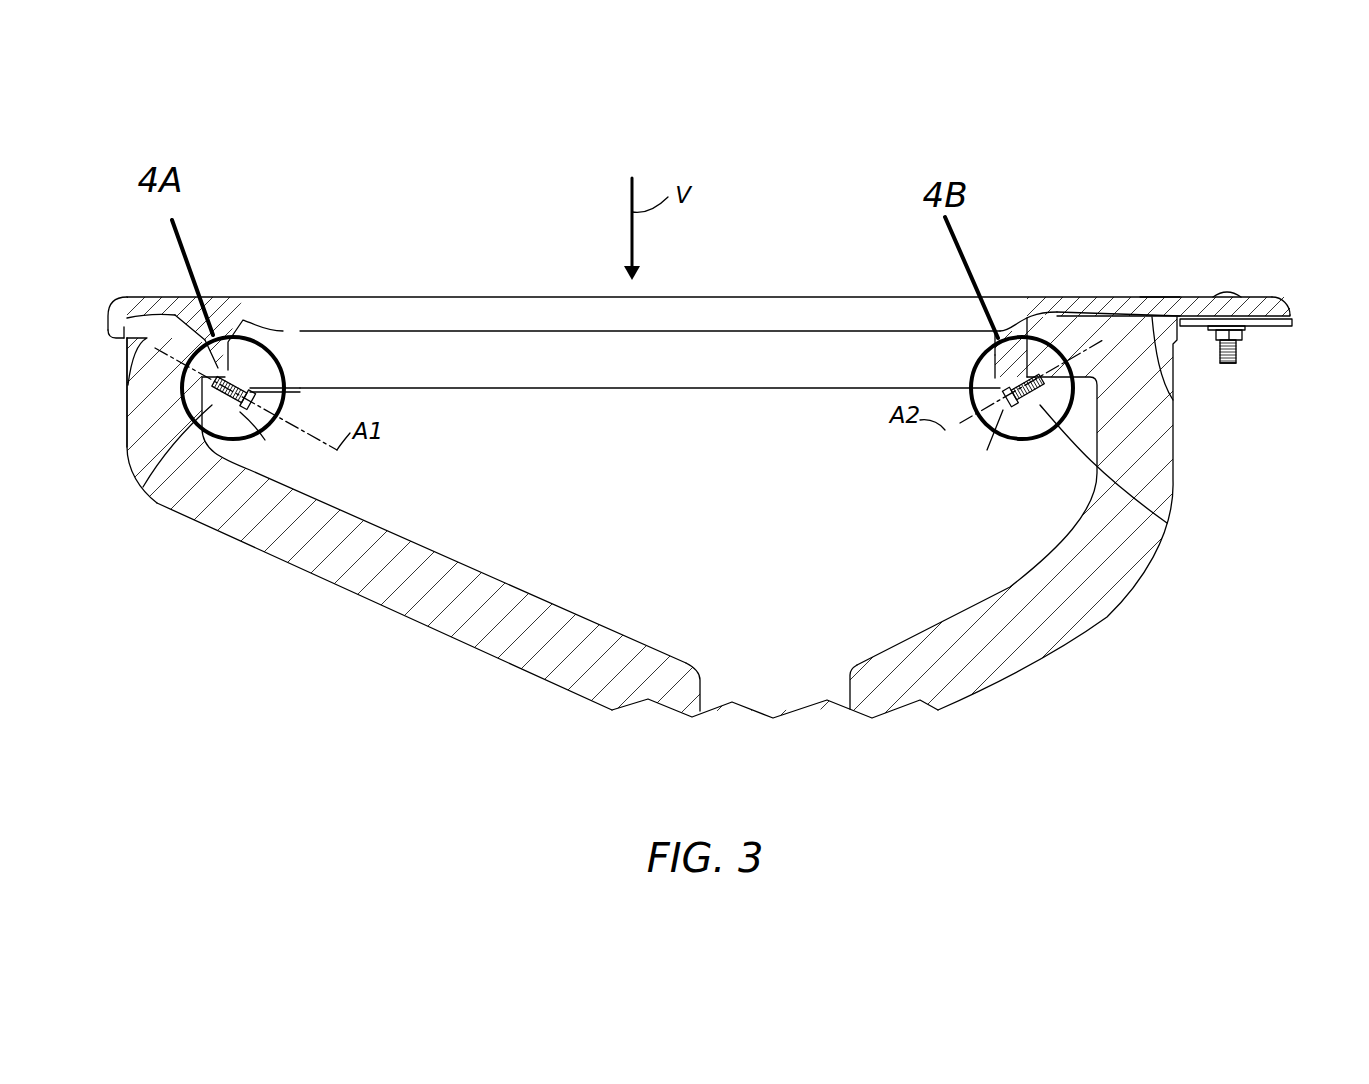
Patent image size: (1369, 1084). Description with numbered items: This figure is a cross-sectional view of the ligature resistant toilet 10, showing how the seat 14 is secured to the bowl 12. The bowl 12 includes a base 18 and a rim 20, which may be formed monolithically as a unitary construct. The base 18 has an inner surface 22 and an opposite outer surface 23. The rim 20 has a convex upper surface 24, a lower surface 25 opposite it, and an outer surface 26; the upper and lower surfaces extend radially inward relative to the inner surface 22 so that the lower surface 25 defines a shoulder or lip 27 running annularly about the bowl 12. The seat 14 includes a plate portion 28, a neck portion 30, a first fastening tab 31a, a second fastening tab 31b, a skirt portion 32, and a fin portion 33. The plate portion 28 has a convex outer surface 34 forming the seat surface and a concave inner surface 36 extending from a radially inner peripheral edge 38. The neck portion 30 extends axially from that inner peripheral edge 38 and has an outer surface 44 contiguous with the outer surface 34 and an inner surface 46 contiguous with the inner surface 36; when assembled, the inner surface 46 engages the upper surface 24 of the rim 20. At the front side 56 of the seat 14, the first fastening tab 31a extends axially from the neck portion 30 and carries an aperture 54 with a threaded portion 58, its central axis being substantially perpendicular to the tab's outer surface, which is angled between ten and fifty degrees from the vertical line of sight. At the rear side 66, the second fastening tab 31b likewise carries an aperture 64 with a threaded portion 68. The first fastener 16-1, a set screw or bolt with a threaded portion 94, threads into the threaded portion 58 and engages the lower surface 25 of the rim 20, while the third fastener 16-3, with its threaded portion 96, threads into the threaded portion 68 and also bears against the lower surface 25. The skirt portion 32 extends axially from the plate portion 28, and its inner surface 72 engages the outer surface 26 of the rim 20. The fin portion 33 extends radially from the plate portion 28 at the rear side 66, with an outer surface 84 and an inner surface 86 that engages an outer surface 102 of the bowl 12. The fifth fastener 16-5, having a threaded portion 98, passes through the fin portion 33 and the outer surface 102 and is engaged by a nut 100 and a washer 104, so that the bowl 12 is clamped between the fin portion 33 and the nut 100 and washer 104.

The ligature resistant toilet 10 is at (1205, 178).
The bowl 12 is at (150, 500).
The seat 14 is at (118, 292).
The first fastener 16-1 is at (247, 407).
The third fastener 16-3 is at (1003, 410).
The fifth fastener 16-5 is at (1242, 353).
The base 18 is at (150, 440).
The rim 20 is at (147, 335).
The inner surface 22 is at (405, 540).
The outer surface 23 is at (243, 553).
The upper surface 24 is at (167, 313).
The lower surface 25 is at (193, 387).
The outer surface 26 is at (113, 330).
The lip 27 is at (225, 353).
The plate portion 28 is at (1080, 298).
The neck portion 30 is at (858, 367).
The first fastening tab 31a is at (265, 432).
The second fastening tab 31b is at (1000, 415).
The skirt portion 32 is at (122, 340).
The fin portion 33 is at (1205, 297).
The outer surface 34 is at (769, 325).
The inner surface 36 is at (1113, 318).
The radially inner peripheral edge 38 is at (463, 330).
The outer surface 44 is at (769, 370).
The inner surface 46 is at (1032, 365).
The aperture 54 is at (253, 377).
The front side 56 is at (140, 298).
The threaded portion 58 is at (257, 393).
The aperture 64 is at (1000, 385).
The rear side 66 is at (1148, 298).
The threaded portion 68 is at (1000, 393).
The inner surface 72 is at (115, 307).
The outer surface 84 is at (1253, 297).
The inner surface 86 is at (1178, 400).
The threaded portion 94 is at (143, 487).
The threaded portion 96 is at (1157, 517).
The threaded portion 98 is at (1228, 365).
The nut 100 is at (1212, 332).
The outer surface 102 is at (1285, 319).
The washer 104 is at (1250, 336).